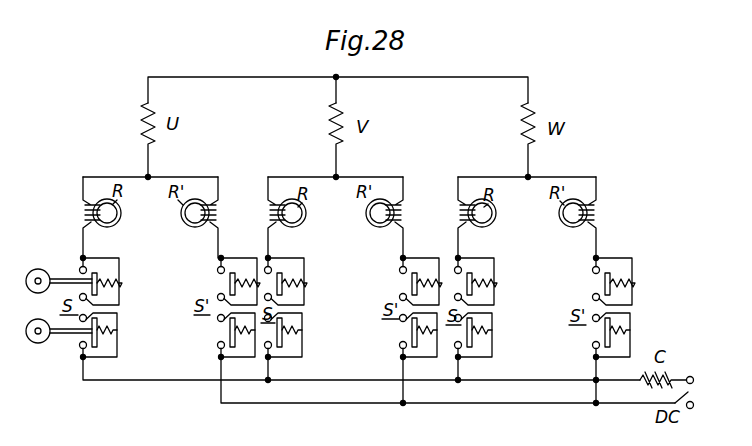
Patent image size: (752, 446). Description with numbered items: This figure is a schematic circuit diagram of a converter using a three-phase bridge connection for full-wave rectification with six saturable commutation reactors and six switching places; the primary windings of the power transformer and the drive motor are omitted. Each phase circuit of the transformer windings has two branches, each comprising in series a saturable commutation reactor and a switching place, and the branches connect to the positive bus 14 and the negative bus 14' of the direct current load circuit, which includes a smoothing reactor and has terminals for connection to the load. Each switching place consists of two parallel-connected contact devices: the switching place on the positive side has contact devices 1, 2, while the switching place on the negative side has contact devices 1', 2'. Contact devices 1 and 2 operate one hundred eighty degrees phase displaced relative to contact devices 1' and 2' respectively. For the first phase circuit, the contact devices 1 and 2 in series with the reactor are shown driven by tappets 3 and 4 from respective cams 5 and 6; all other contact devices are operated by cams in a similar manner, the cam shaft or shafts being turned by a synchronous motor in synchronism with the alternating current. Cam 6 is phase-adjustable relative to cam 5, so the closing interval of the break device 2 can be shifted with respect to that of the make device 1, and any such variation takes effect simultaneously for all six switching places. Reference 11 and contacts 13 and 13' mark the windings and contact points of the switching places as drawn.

The contact device 1 is at (108, 264).
The contact device 2 is at (84, 362).
The tappet 3 is at (62, 277).
The tappet 4 is at (63, 336).
The cam 5 is at (41, 269).
The cam 6 is at (40, 344).
The relay winding 11 is at (101, 278).
The contact 13 is at (97, 268).
The positive bus 14 is at (361, 378).
The contact device 1' is at (237, 264).
The contact device 2' is at (212, 332).
The contact 13' is at (205, 268).
The negative bus 14' is at (448, 389).